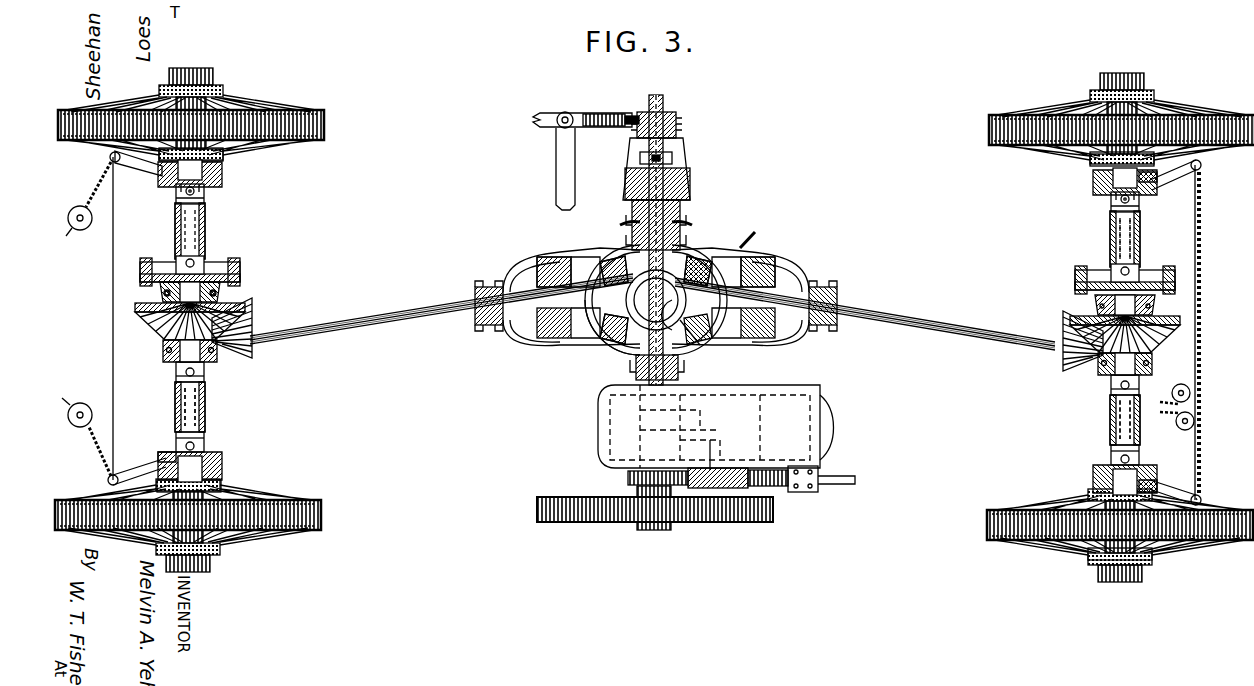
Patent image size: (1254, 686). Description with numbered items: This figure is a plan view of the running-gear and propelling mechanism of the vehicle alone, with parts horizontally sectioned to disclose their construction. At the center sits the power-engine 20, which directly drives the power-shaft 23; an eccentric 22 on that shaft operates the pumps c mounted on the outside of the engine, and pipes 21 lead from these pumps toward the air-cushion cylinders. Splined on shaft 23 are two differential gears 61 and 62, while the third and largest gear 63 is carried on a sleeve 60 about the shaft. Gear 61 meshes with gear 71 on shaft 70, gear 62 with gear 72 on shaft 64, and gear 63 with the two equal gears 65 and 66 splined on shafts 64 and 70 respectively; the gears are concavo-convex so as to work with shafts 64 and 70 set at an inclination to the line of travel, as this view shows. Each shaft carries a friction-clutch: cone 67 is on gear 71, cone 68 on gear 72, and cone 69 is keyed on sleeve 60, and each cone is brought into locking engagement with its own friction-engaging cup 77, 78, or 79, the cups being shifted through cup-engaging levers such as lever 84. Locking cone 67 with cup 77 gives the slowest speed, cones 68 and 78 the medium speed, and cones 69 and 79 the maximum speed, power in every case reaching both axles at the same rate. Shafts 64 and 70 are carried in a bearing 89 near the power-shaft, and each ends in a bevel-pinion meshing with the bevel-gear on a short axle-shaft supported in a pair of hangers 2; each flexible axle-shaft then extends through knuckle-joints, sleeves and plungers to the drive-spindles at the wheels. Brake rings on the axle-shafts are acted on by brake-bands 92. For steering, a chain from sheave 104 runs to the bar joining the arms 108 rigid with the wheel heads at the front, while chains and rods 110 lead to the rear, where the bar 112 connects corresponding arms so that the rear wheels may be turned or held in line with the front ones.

The hangers 2 is at (218, 296).
The power-engine 20 is at (716, 426).
The pipes 21 is at (808, 490).
The eccentric 22 is at (628, 480).
The power-shaft 23 is at (663, 108).
The sleeve 60 is at (684, 210).
The differential gear 61 is at (680, 372).
The differential gear 62 is at (680, 342).
The third and largest gear 63 is at (700, 346).
The shaft 64 is at (925, 318).
The gear 65 is at (606, 264).
The gear 66 is at (680, 232).
The cone 67 is at (555, 258).
The cone 68 is at (755, 262).
The cone 69 is at (690, 186).
The shaft 70 is at (375, 318).
The gear 71 is at (620, 345).
The gear 72 is at (728, 254).
The friction-engaging cup 77 is at (515, 268).
The friction-engaging cup 78 is at (790, 268).
The friction-engaging cup 79 is at (685, 152).
The cup-engaging lever 84 is at (597, 128).
The bearing 89 is at (590, 328).
The brake-bands 92 is at (235, 283).
The sheave 104 is at (113, 322).
The arms 108 is at (142, 176).
The chains and rods 110 is at (1168, 404).
The bar 112 is at (1201, 252).
The pumps c is at (705, 448).